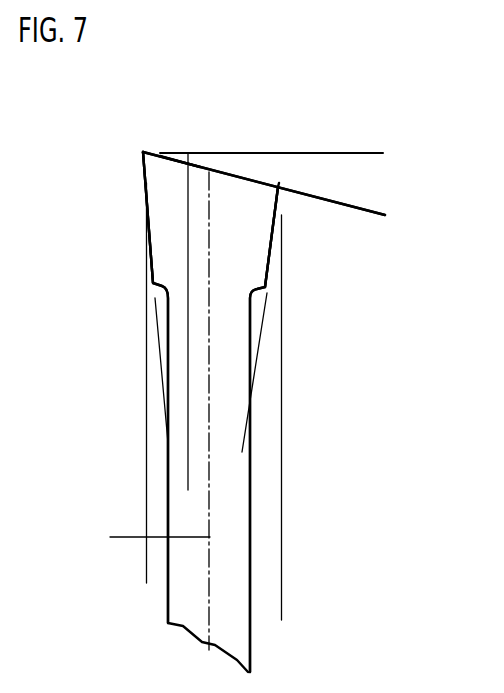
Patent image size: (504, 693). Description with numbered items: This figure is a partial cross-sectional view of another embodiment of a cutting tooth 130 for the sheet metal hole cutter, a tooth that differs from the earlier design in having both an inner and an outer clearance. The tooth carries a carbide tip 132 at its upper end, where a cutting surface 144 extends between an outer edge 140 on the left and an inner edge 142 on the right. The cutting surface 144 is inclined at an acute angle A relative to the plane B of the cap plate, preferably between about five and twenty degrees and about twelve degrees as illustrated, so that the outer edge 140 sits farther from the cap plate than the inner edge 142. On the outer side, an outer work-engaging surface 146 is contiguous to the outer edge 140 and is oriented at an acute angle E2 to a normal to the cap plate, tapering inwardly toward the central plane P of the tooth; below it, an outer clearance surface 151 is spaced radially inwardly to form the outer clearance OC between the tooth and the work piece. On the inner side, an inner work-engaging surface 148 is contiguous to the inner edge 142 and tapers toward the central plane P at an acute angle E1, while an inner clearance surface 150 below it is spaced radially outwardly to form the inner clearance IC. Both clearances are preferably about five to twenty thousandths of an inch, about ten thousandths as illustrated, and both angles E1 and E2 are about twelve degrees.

The cutting tooth 130 is at (120, 282).
The carbide tip 132 is at (177, 157).
The outer edge 140 is at (143, 152).
The inner edge 142 is at (280, 188).
The cutting surface 144 is at (222, 172).
The outer work-engaging surface 146 is at (148, 218).
The inner work-engaging surface 148 is at (272, 258).
The inner clearance surface 150 is at (250, 352).
The outer clearance surface 151 is at (165, 357).
The acute angle A is at (377, 154).
The plane of the cap plate B is at (300, 153).
The acute angle of inner work-engaging surface E1 is at (247, 423).
The acute angle of outer work-engaging surface E2 is at (203, 337).
The central plane of the tooth P is at (153, 538).
The outer clearance OC is at (203, 572).
The inner clearance IC is at (213, 599).